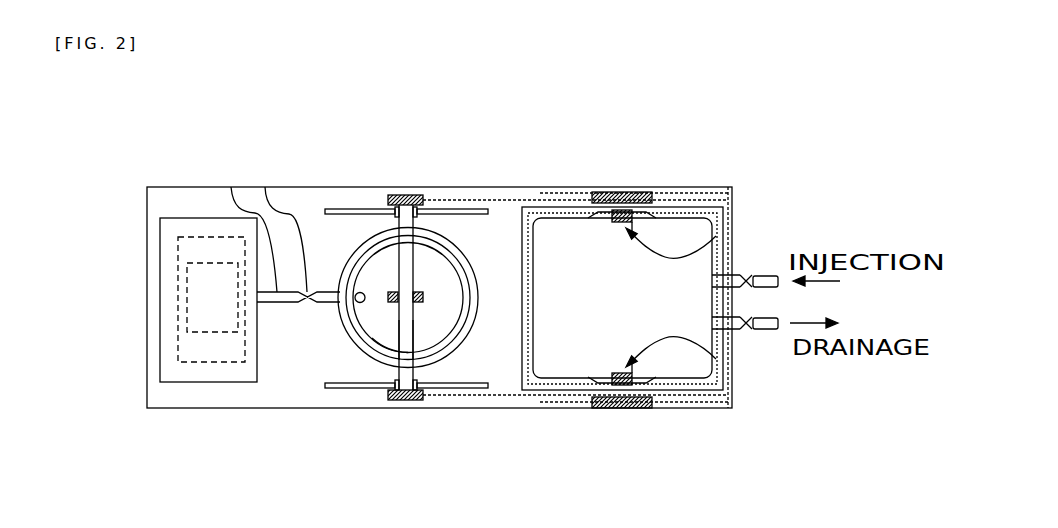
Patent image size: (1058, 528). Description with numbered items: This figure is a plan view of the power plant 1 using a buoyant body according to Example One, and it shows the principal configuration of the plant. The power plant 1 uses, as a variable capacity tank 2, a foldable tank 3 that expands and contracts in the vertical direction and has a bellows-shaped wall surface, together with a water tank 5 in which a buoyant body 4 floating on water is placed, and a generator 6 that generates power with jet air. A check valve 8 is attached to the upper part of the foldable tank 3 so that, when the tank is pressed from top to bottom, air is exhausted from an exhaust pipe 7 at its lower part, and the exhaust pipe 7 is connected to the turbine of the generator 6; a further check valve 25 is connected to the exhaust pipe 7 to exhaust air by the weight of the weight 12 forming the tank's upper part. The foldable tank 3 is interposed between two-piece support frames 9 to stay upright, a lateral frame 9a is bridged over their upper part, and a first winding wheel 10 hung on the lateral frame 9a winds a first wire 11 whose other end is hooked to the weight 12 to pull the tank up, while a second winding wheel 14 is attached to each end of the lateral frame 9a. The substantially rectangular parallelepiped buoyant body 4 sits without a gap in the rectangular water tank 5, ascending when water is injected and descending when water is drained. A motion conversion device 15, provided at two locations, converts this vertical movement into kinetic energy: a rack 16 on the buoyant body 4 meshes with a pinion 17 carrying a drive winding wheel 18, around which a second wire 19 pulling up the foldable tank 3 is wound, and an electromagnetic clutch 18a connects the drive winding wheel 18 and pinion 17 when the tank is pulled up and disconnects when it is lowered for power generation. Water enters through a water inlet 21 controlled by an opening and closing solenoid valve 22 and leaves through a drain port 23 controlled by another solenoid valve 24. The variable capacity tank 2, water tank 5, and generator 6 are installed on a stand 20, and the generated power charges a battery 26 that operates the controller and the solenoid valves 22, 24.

The power plant 1 is at (198, 120).
The variable capacity tank 2 is at (380, 240).
The foldable tank 3 is at (355, 243).
The buoyant body 4 is at (557, 220).
The water tank 5 is at (716, 207).
The generator 6 is at (160, 340).
The exhaust pipe 7 is at (231, 187).
The check valve 8 is at (355, 300).
The support frames 9 is at (400, 378).
The lateral frame 9a is at (400, 342).
The first winding wheel 10 is at (372, 338).
The first wire 11 is at (388, 300).
The weight 12 is at (382, 258).
The second winding wheel 14 is at (400, 193).
The motion conversion device 15 is at (716, 236).
The rack 16 is at (597, 216).
The pinion 17 is at (643, 214).
The drive winding wheel 18 is at (625, 192).
The electromagnetic clutch 18a is at (633, 212).
The second wire 19 is at (489, 208).
The stand 20 is at (443, 188).
The water inlet 21 is at (733, 273).
The opening and closing solenoid valve 22 is at (752, 277).
The drain port 23 is at (733, 331).
The opening and closing solenoid valve 24 is at (752, 330).
The check valve 25 is at (265, 187).
The battery 26 is at (190, 298).